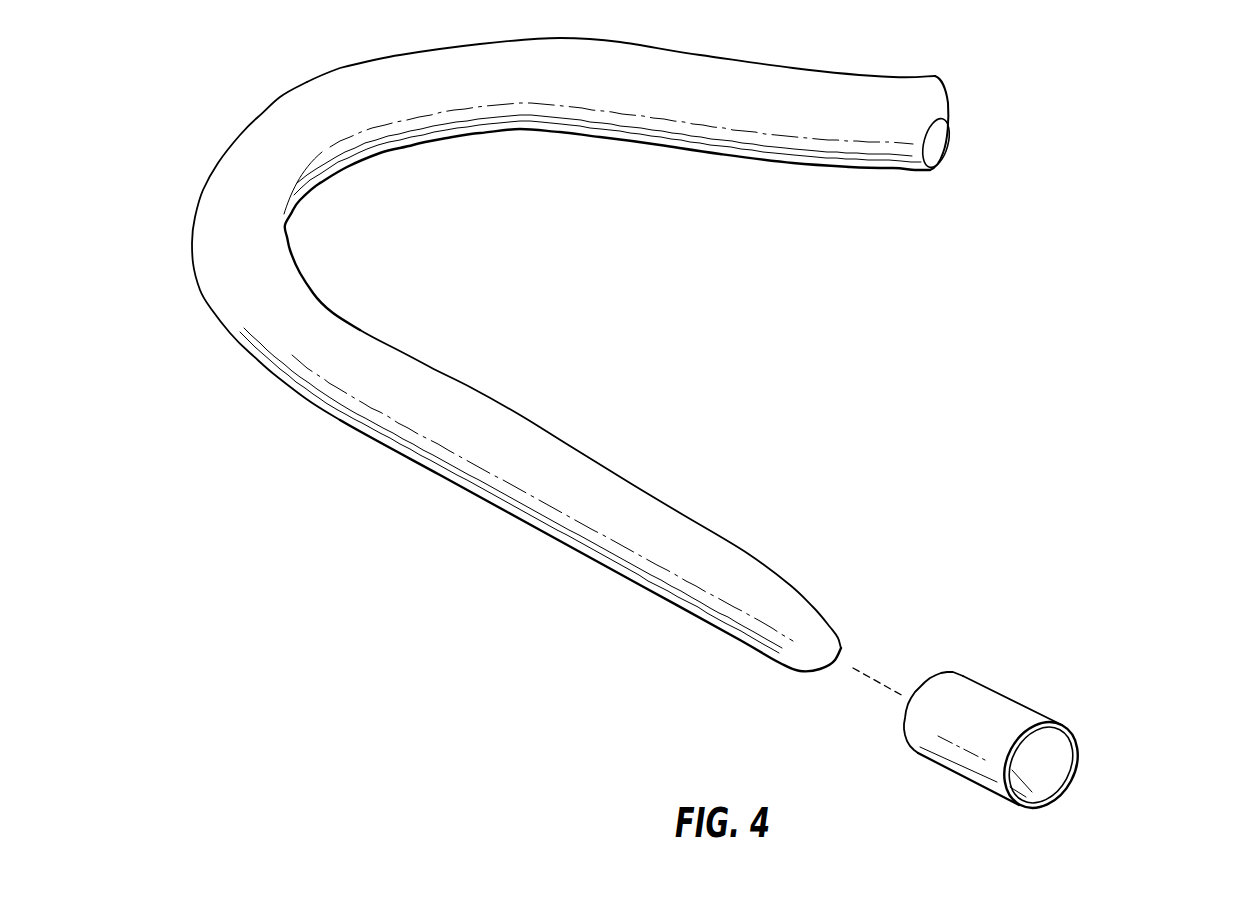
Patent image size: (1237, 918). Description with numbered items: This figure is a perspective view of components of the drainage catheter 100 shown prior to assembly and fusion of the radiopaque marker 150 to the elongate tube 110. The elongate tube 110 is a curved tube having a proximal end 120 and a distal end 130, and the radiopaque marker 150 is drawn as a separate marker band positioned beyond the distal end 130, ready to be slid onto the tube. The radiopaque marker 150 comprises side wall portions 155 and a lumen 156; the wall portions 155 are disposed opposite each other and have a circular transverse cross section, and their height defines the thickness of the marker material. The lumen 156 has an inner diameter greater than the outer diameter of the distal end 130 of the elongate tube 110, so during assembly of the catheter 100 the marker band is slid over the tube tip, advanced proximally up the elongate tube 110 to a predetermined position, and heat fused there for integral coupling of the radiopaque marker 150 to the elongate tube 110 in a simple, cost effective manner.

The catheter 100 is at (706, 354).
The elongate tube 110 is at (807, 178).
The proximal end 120 is at (322, 218).
The distal end 130 is at (753, 532).
The radiopaque marker 150 is at (1029, 671).
The side wall portions 155 is at (1067, 722).
The lumen 156 is at (1047, 770).